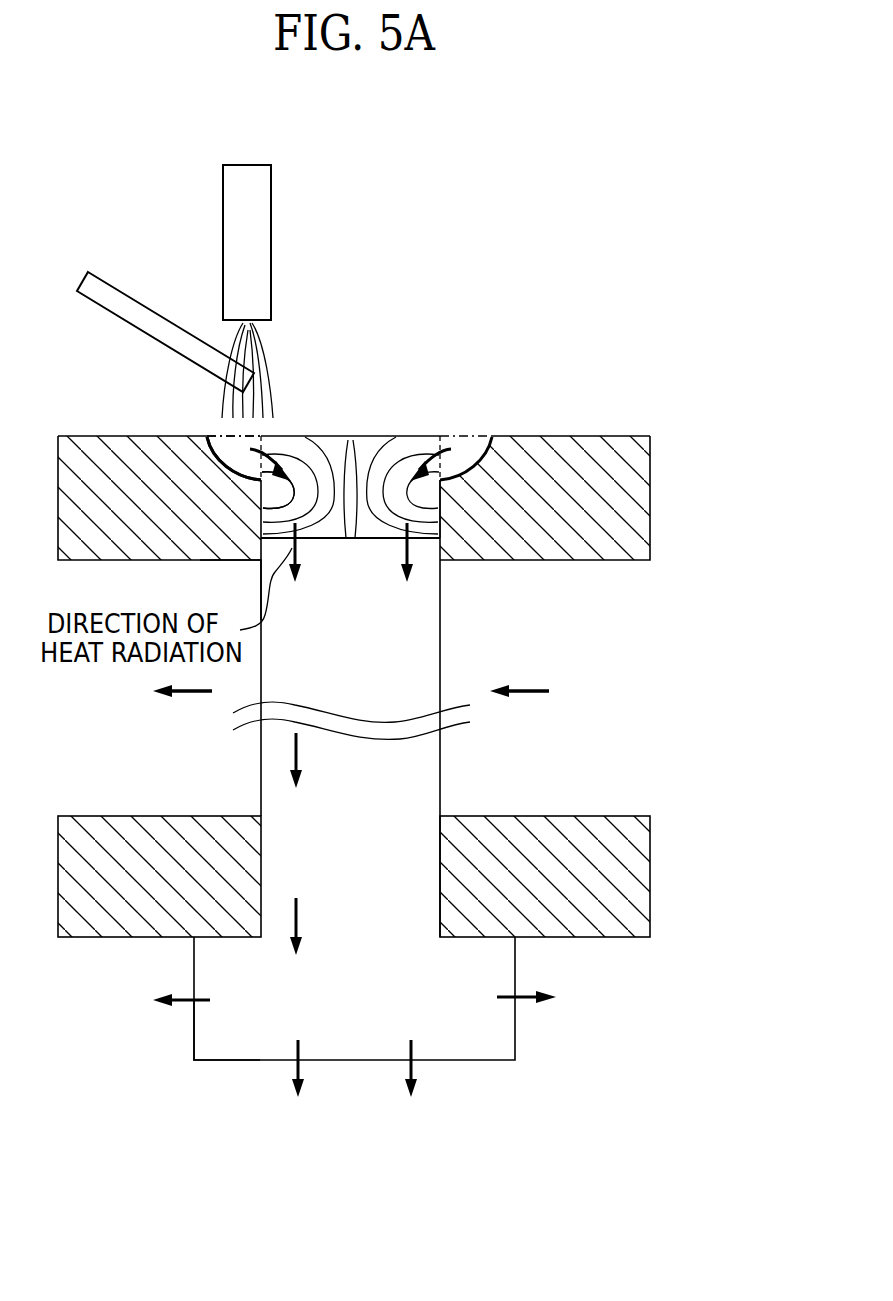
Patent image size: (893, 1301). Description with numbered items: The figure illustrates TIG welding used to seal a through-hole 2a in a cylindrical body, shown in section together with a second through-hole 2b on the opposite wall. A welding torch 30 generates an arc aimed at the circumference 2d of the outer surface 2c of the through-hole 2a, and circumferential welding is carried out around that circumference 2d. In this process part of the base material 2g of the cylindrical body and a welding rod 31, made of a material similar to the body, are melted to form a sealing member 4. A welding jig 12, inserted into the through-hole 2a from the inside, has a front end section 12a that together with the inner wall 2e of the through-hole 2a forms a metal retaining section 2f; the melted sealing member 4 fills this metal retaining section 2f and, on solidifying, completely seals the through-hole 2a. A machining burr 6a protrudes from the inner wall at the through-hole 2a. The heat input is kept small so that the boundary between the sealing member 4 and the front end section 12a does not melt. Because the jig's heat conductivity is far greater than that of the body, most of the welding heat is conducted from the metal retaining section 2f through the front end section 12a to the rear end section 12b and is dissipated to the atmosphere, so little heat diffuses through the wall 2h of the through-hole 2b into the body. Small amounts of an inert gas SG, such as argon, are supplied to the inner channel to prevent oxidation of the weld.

The welding torch 30 is at (273, 229).
The welding rod 31 is at (120, 290).
The through-hole 2a is at (401, 436).
The outer surface 2c is at (518, 436).
The through-hole 2b is at (440, 877).
The circumference 2d is at (262, 437).
The inner wall 2e is at (428, 501).
The metal retaining section 2f is at (303, 480).
The base material 2g is at (227, 437).
The wall 2h is at (440, 838).
The sealing member 4 is at (347, 453).
The machining burr 6a is at (260, 563).
The welding jig 12 is at (277, 1050).
The front end section 12a is at (377, 520).
The rear end section 12b is at (213, 1065).
The inert gas SG is at (187, 697).